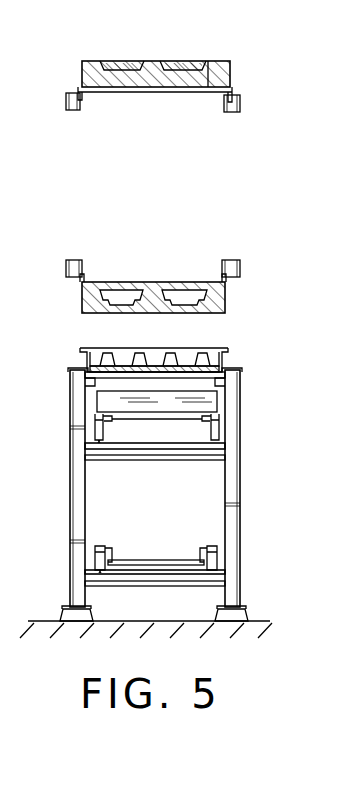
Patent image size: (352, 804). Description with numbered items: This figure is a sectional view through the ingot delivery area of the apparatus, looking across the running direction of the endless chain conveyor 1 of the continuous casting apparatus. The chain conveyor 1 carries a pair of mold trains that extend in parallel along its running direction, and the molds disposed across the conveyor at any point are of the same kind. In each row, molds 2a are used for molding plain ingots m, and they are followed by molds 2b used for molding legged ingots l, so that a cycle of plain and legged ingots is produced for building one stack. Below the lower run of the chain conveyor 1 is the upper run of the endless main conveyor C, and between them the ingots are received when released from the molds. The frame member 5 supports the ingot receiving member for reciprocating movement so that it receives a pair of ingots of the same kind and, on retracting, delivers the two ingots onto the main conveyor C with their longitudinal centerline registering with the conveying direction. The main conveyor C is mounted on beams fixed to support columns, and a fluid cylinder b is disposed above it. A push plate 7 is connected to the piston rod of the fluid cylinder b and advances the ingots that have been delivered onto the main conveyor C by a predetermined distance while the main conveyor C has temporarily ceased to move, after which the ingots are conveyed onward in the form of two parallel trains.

The endless chain conveyor 1 is at (260, 117).
The molds for plain ingots 2a is at (232, 63).
The molds for legged ingots 2b is at (226, 308).
The plain ingot m is at (118, 61).
The fluid cylinder b is at (154, 358).
The legged ingot l is at (110, 356).
The frame member 5 is at (80, 349).
The push plate 7 is at (212, 398).
The main conveyor C is at (120, 407).